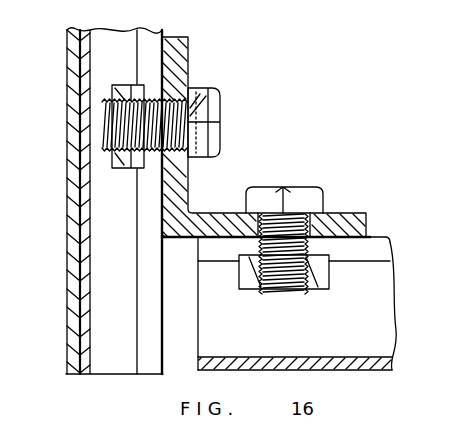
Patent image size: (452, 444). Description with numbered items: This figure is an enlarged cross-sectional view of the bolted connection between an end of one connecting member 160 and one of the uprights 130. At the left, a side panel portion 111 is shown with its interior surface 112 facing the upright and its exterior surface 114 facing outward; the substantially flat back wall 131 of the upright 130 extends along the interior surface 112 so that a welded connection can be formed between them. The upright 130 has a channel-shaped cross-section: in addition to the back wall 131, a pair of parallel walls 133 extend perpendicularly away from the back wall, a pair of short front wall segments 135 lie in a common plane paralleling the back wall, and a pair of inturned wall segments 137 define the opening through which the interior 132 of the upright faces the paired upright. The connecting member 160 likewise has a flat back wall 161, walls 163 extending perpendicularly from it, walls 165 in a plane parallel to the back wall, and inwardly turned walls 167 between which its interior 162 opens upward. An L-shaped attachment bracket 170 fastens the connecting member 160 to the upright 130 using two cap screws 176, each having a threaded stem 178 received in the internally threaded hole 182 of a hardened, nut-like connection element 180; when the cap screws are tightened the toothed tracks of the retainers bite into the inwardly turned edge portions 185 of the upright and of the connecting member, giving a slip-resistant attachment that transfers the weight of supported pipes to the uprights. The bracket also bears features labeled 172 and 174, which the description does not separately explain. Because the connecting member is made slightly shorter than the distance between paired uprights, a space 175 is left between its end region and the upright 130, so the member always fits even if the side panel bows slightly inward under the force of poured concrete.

The side panel portion 111 is at (73, 30).
The interior surface 112 is at (92, 173).
The exterior surface 114 is at (69, 257).
The flat back wall 131 is at (98, 214).
The parallel walls 133 is at (102, 348).
The upright 130 is at (128, 46).
The interior 132 is at (126, 228).
The short front wall segments 135 is at (175, 306).
The inturned wall segments 137 is at (145, 315).
The space 175 is at (185, 344).
The L-shaped attachment bracket 170 is at (299, 137).
The bracket flange 172 is at (182, 63).
The slot 174 is at (201, 87).
The cap screw 176 is at (208, 128).
The threaded stem 178 is at (212, 103).
The nut-like connection element 180 is at (135, 169).
The internally threaded hole 182 is at (113, 82).
The inwardly turned edge portion 185 is at (137, 257).
The connecting member 160 is at (325, 317).
The flat back wall 161 is at (296, 357).
The interior 162 is at (383, 280).
The walls 163 is at (386, 322).
The walls 165 is at (385, 238).
The inwardly turned walls 167 is at (390, 256).